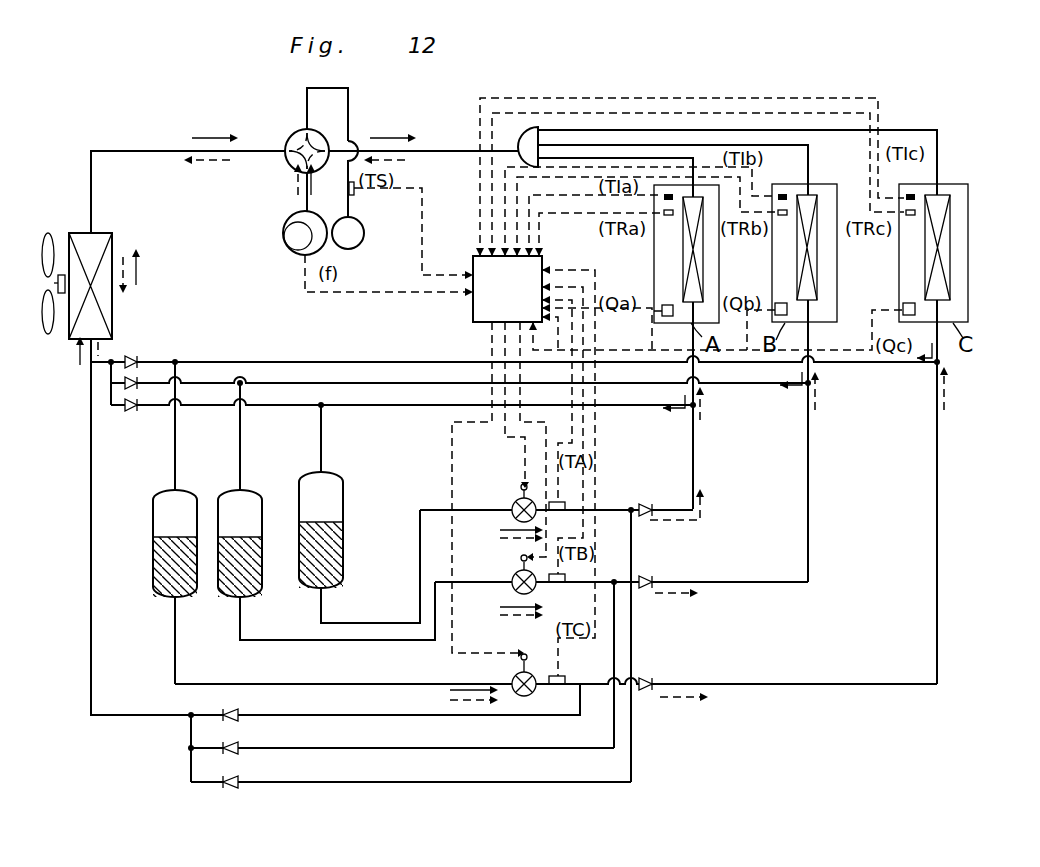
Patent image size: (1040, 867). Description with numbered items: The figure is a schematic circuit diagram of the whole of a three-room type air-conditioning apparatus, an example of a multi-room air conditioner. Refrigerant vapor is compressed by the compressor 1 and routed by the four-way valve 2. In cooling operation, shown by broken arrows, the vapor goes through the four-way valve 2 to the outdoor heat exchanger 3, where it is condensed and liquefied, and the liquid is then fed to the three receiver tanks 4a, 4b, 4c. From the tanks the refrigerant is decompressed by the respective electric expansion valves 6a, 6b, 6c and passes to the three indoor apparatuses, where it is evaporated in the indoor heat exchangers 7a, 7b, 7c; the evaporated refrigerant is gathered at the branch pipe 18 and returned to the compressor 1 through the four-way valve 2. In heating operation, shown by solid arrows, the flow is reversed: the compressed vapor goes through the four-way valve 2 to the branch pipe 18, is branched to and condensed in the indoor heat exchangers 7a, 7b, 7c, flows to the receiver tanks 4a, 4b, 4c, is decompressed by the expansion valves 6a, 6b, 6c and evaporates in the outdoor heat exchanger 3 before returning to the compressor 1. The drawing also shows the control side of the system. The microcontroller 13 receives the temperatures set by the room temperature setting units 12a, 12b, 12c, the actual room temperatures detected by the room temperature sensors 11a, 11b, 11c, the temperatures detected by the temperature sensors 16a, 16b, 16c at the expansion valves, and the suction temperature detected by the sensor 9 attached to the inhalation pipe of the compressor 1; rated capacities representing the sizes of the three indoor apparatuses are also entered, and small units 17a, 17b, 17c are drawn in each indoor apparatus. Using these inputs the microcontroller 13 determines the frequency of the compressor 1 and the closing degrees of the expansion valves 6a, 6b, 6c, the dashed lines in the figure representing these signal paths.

The compressor 1 is at (285, 246).
The four-way valve 2 is at (292, 138).
The outdoor heat exchanger 3 is at (112, 308).
The receiver tank 4a is at (343, 510).
The receiver tank 4b is at (262, 510).
The receiver tank 4c is at (153, 507).
The electric expansion valve 6a is at (514, 500).
The electric expansion valve 6b is at (514, 574).
The electric expansion valve 6c is at (514, 678).
The indoor heat exchanger 7a is at (703, 268).
The indoor heat exchanger 7b is at (817, 282).
The indoor heat exchanger 7c is at (950, 282).
The sensor 9 is at (354, 190).
The room temperature sensor 11a is at (668, 216).
The room temperature sensor 11b is at (779, 215).
The room temperature sensor 11c is at (908, 216).
The room temperature setting unit 12a is at (667, 200).
The room temperature setting unit 12b is at (786, 196).
The room temperature setting unit 12c is at (914, 196).
The microcontroller 13 is at (473, 320).
The temperature sensor 16a is at (560, 502).
The temperature sensor 16b is at (566, 576).
The temperature sensor 16c is at (560, 676).
The load setting unit 17a is at (662, 316).
The load setting unit 17b is at (787, 315).
The load setting unit 17c is at (915, 315).
The branch pipe 18 is at (535, 128).